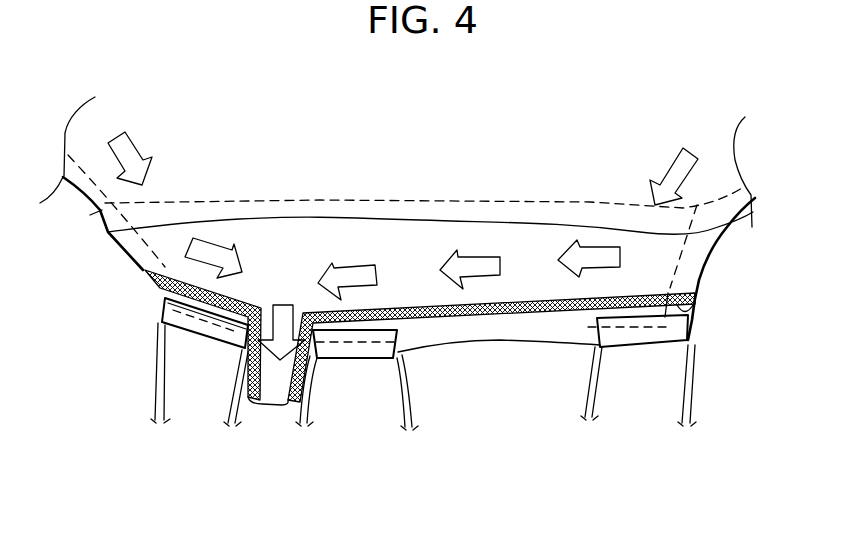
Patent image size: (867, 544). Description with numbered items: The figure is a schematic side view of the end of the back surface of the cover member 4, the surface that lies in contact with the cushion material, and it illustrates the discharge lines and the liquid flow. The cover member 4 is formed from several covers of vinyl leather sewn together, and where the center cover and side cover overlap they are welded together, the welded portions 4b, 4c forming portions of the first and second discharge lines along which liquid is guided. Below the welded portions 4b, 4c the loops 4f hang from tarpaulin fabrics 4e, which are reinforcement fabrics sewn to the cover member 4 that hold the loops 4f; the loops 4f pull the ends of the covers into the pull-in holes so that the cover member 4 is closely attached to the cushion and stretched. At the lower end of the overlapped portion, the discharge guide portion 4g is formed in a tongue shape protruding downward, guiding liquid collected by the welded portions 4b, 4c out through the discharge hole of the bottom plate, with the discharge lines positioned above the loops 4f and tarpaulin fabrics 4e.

The cover member 4 is at (688, 259).
The welded portion 4b is at (167, 293).
The welded portion 4c is at (693, 309).
The tarpaulin fabric 4e is at (207, 333).
The loop 4f is at (157, 402).
The discharge guide portion 4g is at (262, 393).